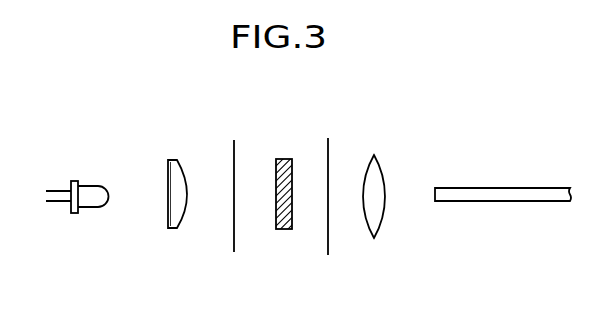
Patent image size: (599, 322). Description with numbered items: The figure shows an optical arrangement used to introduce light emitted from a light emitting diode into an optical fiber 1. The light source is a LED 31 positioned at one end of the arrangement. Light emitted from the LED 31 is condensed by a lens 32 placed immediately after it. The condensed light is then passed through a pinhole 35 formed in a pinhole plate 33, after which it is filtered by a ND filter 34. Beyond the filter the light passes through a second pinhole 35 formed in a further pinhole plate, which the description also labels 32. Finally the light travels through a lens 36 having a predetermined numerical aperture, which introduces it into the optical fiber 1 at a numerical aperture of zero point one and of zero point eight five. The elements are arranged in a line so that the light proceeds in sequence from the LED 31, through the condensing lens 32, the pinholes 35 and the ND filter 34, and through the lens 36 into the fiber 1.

The optical fiber 1 is at (509, 195).
The LED 31 is at (97, 202).
The lens 32 is at (172, 229).
The pinhole plate 33 is at (235, 250).
The ND filter 34 is at (283, 229).
The pinhole 35 is at (233, 198).
The lens 36 is at (377, 228).